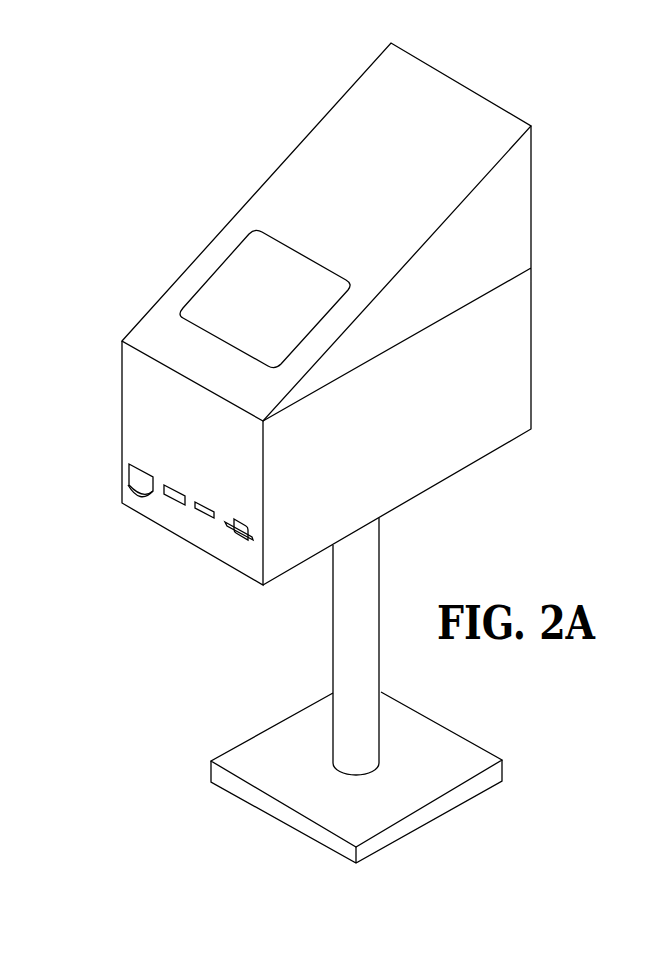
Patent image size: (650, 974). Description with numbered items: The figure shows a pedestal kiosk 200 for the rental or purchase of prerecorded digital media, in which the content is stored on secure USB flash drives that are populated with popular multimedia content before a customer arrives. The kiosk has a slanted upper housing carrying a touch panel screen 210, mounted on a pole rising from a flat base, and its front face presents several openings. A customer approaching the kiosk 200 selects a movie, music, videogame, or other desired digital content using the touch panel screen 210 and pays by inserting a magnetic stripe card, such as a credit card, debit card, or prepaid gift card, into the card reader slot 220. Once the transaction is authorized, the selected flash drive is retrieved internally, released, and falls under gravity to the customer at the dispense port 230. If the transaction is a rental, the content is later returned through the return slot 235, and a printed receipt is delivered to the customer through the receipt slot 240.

The pedestal kiosk 200 is at (184, 145).
The touch panel screen 210 is at (281, 312).
The card reader slot 220 is at (243, 543).
The dispense port 230 is at (125, 483).
The return slot 235 is at (172, 499).
The receipt slot 240 is at (201, 514).